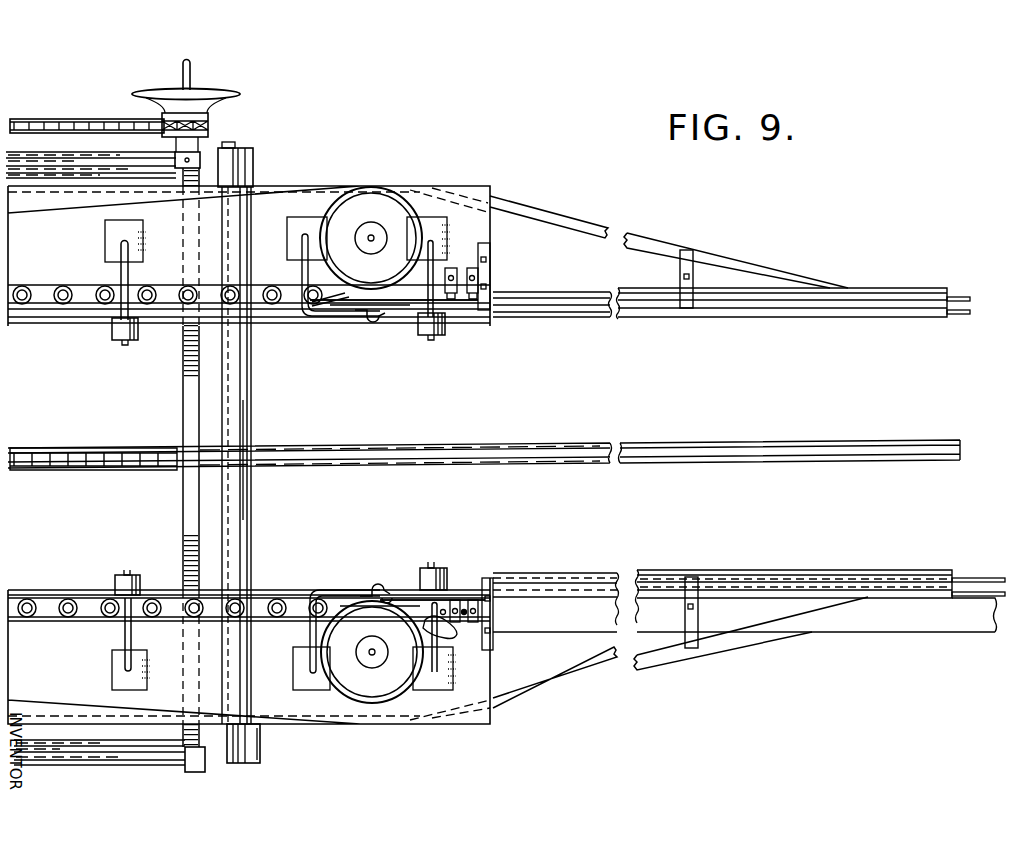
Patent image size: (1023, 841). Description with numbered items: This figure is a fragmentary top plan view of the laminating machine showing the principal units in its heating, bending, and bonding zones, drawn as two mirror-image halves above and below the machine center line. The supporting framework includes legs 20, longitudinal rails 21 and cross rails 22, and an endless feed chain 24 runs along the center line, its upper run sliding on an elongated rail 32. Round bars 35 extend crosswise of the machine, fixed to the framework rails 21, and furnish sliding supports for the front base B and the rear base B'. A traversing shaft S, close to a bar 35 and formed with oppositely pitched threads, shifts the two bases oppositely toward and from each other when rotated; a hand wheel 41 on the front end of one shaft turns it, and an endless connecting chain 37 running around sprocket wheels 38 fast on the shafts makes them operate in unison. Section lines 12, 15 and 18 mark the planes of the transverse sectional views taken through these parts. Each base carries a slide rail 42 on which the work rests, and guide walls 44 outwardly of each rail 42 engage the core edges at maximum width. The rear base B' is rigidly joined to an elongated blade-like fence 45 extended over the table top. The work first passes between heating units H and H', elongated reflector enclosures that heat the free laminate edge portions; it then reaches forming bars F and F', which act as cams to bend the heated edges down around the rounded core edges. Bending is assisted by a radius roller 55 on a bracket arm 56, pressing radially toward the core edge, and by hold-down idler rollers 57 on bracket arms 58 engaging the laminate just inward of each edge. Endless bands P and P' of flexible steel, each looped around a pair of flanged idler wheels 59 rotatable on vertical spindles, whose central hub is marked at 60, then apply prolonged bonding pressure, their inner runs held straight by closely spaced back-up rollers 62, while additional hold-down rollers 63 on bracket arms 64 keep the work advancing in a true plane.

The section line 12— 12 is at (490, 96).
The section line 15— 15 is at (220, 127).
The section line 18— 18 is at (186, 50).
The legs 20 is at (253, 172).
The longitudinal rails 21 is at (73, 159).
The cross rails 22 is at (250, 404).
The endless feed chain 24 is at (88, 452).
The elongated rail 32 is at (373, 445).
The round bars 35 is at (242, 515).
The endless connecting chain 37 is at (86, 119).
The sprocket wheels 38 is at (215, 113).
The hand wheel 41 is at (218, 92).
The slide rail 42 is at (78, 324).
The guide walls 44 is at (962, 310).
The fence 45 is at (842, 622).
The radius roller 55 is at (377, 314).
The bracket arm 56 is at (337, 318).
The hold-down idler rollers 57 is at (445, 331).
The bracket arm 58 is at (428, 271).
The flanged idler wheels 59 is at (366, 189).
The wheel hub 60 is at (368, 238).
The back-up rollers 62 is at (30, 285).
The hold-down rollers 63 is at (132, 339).
The bracket arms 64 is at (120, 272).
The front base B is at (631, 231).
The rear base B' is at (680, 662).
The forming bar F is at (394, 328).
The forming bar F' is at (412, 574).
The heating unit H is at (787, 332).
The heating unit H' is at (748, 556).
The endless band P is at (249, 256).
The endless band P' is at (249, 651).
The traversing shaft S is at (183, 410).